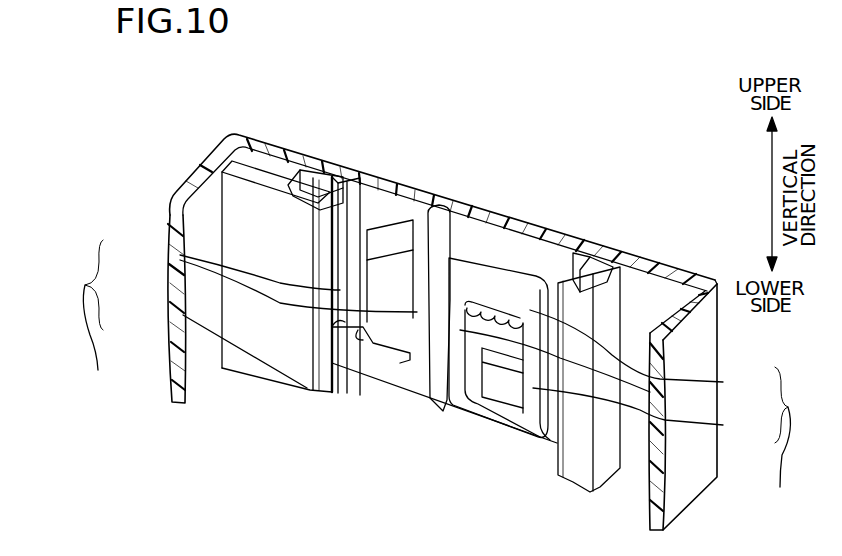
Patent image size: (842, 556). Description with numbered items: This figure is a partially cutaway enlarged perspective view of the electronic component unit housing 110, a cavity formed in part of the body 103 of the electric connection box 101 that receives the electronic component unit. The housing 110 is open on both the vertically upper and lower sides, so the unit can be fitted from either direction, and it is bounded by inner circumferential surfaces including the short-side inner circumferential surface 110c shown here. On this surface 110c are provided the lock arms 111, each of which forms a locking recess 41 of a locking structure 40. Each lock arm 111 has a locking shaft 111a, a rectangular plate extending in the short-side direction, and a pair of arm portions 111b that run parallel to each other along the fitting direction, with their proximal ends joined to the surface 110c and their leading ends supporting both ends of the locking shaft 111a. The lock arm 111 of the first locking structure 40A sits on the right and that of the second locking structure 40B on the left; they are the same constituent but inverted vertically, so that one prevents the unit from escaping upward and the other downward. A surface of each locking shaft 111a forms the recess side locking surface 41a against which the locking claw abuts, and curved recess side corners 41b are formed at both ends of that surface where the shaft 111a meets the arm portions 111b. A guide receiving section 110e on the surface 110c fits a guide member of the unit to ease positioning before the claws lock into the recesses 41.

The body 103 is at (442, 297).
The housing 101 is at (231, 130).
The electronic component unit housing 110 is at (206, 224).
The short-side inner circumferential surface 110c is at (473, 235).
The guide receiving section 110e is at (322, 192).
The locking recess 41 is at (485, 306).
The locking structure 40 is at (408, 308).
The first locking structure 40A is at (502, 350).
The second locking structure 40B is at (387, 287).
The recess side locking surface 41a is at (497, 307).
The recess side corner 41b is at (485, 300).
The lock arm 111 is at (442, 387).
The locking shaft 111a is at (183, 315).
The arm portion 111b is at (180, 255).